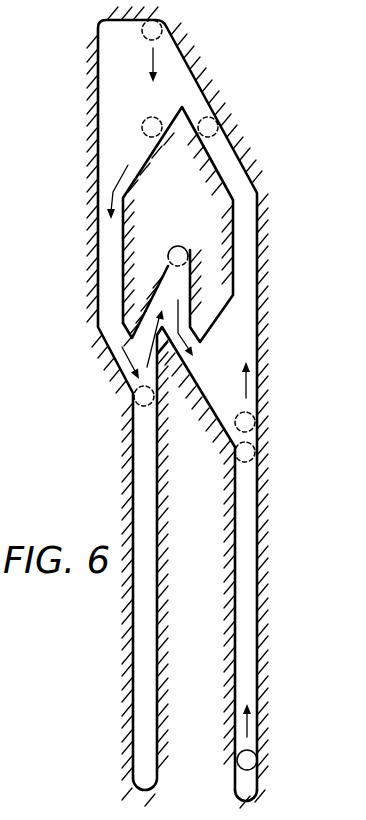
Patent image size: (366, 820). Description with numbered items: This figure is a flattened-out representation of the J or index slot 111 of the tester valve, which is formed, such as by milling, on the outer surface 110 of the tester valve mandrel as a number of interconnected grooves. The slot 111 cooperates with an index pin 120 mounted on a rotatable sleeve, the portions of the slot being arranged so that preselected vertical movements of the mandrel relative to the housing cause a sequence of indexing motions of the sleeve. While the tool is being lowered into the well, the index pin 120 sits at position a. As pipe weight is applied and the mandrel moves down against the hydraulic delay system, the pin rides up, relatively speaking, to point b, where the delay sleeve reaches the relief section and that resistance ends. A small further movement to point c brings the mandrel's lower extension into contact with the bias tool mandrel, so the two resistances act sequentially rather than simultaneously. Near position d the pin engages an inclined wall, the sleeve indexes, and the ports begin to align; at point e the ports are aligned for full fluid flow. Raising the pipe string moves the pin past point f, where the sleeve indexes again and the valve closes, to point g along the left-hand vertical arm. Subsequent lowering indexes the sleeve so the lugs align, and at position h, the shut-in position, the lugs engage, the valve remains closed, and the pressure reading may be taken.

The outer surface of the mandrel 110 is at (276, 253).
The index slot 111 is at (266, 632).
The index pin 120 is at (257, 771).
The run-in position a is at (256, 752).
The delay termination point b is at (256, 456).
The bias mandrel contact point c is at (253, 416).
The indexing and port alignment point d is at (220, 130).
The full-flow position e is at (160, 37).
The closing index point f is at (142, 127).
The closed position on left-hand arm g is at (135, 406).
The shut-in position h is at (190, 256).